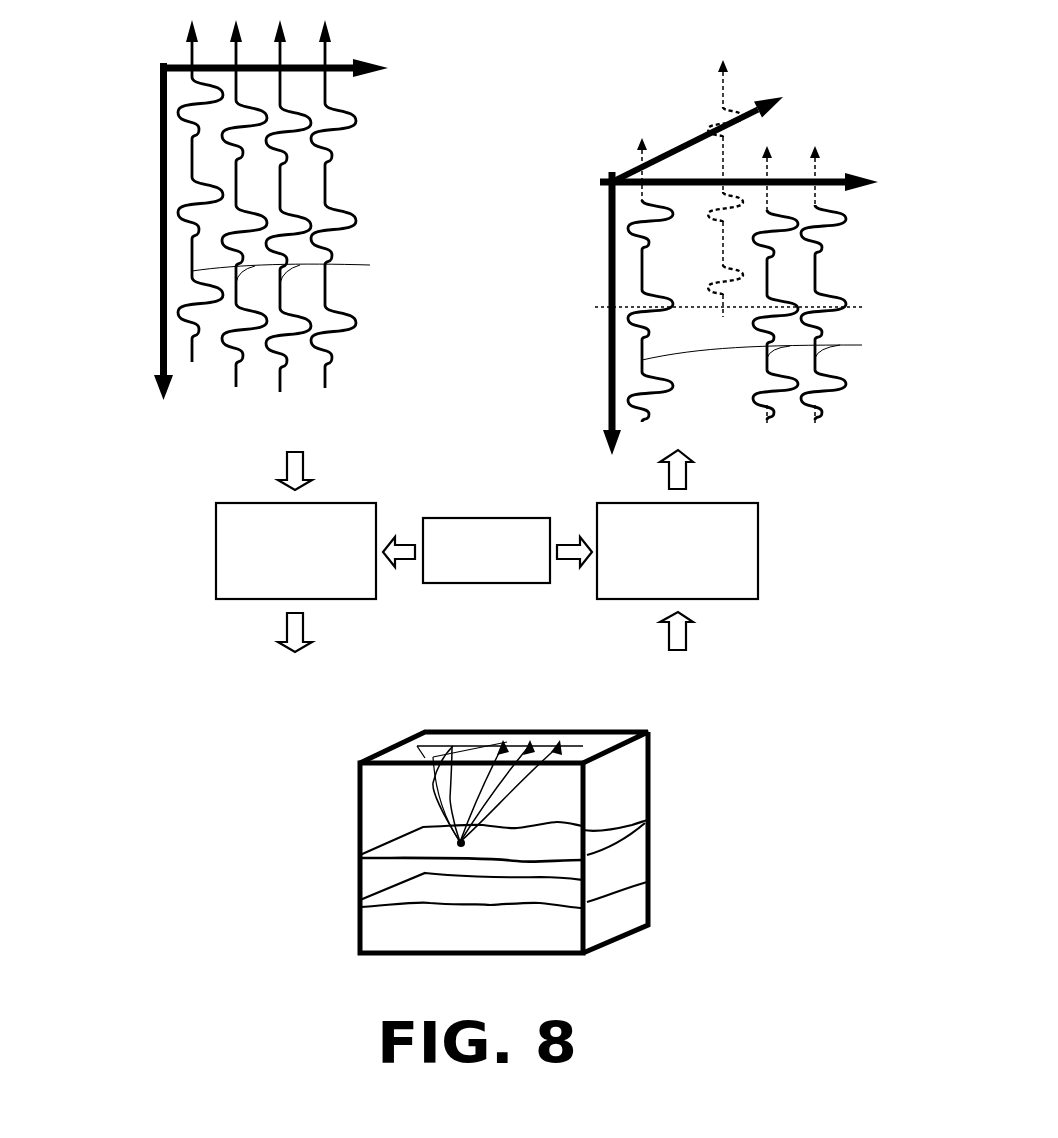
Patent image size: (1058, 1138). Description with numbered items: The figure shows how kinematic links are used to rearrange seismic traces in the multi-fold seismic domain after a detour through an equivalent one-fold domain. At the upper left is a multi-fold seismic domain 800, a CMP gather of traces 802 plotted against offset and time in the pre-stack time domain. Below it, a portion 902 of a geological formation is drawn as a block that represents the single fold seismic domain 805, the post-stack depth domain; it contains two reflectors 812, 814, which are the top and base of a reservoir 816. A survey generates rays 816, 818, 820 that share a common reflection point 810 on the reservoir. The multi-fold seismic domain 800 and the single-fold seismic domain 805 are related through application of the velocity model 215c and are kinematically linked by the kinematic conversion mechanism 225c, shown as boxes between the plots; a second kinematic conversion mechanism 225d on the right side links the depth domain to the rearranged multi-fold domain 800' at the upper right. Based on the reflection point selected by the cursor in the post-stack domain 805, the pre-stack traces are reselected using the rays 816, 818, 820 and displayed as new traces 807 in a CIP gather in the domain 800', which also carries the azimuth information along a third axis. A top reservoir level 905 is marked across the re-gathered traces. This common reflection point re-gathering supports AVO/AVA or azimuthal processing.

The multi-fold seismic domain 800 is at (241, 210).
The traces 802 is at (298, 268).
The multi-fold domain (re-gathered) 800' is at (697, 249).
The top reservoir horizon 905 is at (663, 309).
The new traces 807 is at (774, 347).
The kinematic conversion mechanism 225c is at (215, 503).
The velocity model 215c is at (485, 583).
The kinematic conversion mechanism 225d is at (758, 503).
The portion of a geological formation 902 is at (385, 707).
The single fold seismic domain 805 is at (338, 951).
The reflector 812 is at (416, 830).
The ray / reservoir 816 is at (503, 740).
The ray 818 is at (530, 740).
The ray 820 is at (565, 742).
The common reflection point 810 is at (470, 843).
The reflector 814 is at (442, 900).